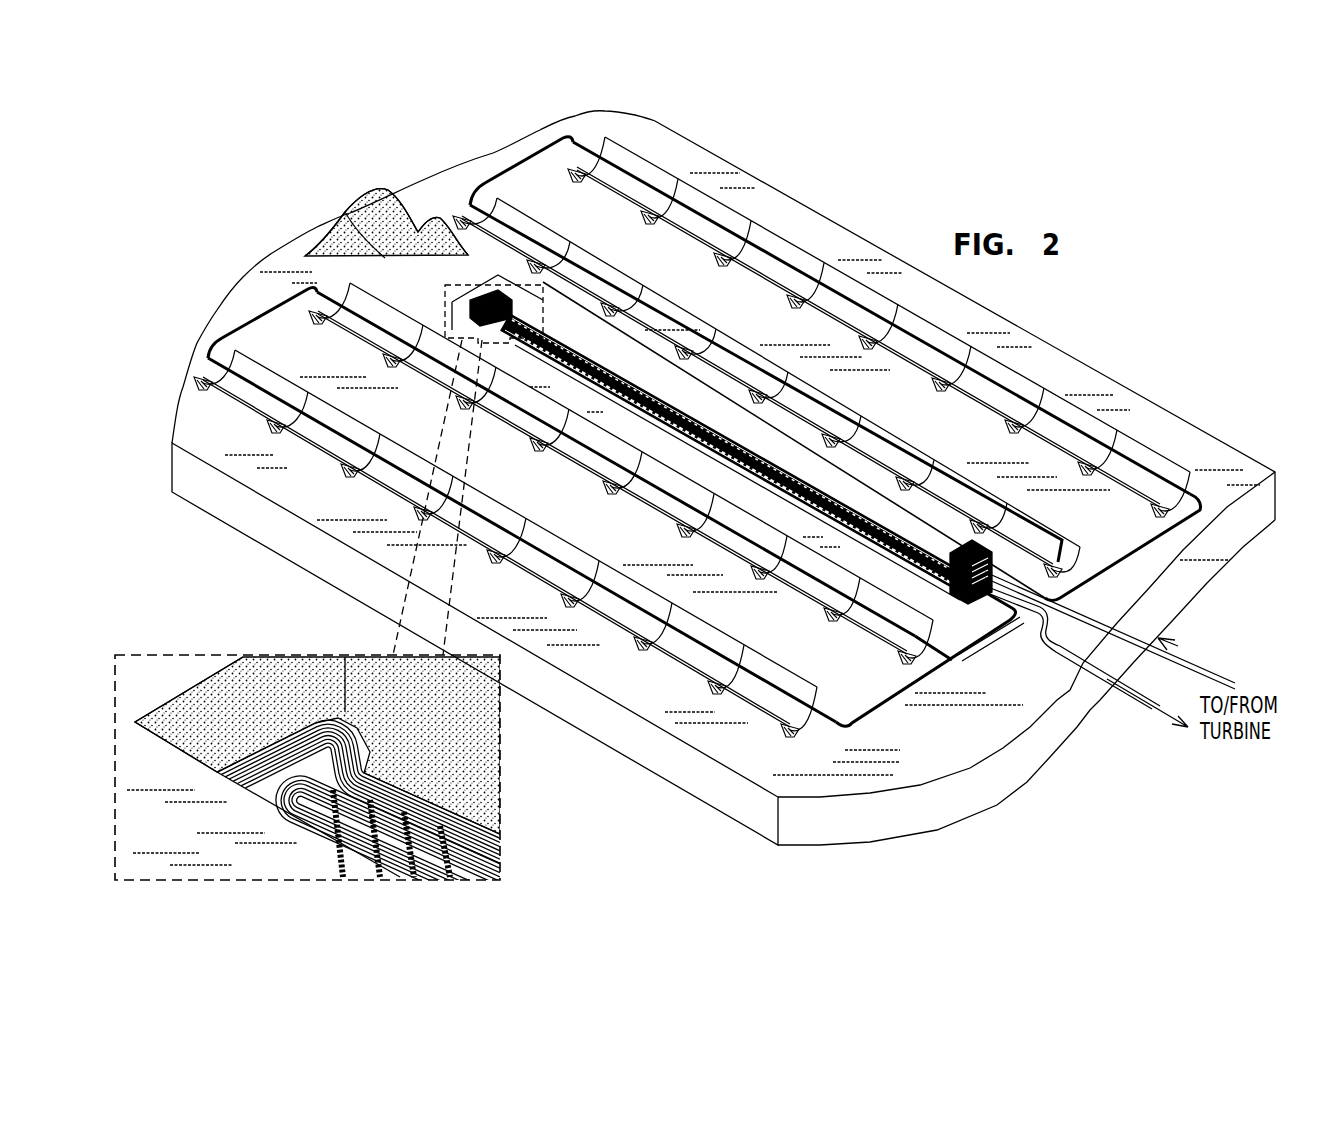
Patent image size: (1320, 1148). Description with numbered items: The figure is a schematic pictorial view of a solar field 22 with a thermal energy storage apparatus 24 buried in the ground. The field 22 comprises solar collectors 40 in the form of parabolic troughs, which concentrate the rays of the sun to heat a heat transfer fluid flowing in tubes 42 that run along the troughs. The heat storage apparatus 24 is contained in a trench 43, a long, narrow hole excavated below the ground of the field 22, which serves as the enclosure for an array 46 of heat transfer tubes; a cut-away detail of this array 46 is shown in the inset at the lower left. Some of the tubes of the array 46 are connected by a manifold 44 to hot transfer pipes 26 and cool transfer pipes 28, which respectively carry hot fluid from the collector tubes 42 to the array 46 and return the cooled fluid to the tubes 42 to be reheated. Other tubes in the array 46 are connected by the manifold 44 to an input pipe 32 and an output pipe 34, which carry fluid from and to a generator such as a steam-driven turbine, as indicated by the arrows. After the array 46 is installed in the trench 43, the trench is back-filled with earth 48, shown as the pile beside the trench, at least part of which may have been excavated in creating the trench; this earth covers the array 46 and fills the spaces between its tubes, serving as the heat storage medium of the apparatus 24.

The solar field 22 is at (274, 192).
The heat storage apparatus 24 is at (700, 397).
The hot transfer pipes 26 is at (1070, 592).
The cool transfer pipes 28 is at (1130, 549).
The input pipe 32 is at (1200, 656).
The output pipe 34 is at (1157, 710).
The solar collectors 40 is at (618, 153).
The tubes 42 is at (713, 223).
The trench 43 is at (468, 460).
The manifold 44 is at (955, 556).
The array of heat transfer tubes 46 is at (705, 453).
The earth 48 is at (365, 214).